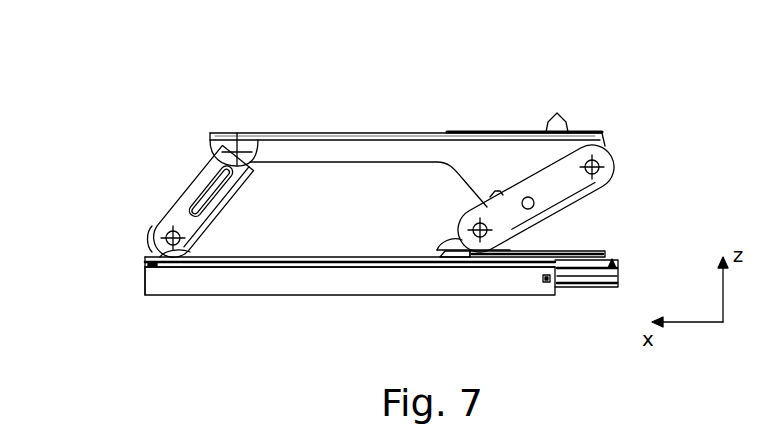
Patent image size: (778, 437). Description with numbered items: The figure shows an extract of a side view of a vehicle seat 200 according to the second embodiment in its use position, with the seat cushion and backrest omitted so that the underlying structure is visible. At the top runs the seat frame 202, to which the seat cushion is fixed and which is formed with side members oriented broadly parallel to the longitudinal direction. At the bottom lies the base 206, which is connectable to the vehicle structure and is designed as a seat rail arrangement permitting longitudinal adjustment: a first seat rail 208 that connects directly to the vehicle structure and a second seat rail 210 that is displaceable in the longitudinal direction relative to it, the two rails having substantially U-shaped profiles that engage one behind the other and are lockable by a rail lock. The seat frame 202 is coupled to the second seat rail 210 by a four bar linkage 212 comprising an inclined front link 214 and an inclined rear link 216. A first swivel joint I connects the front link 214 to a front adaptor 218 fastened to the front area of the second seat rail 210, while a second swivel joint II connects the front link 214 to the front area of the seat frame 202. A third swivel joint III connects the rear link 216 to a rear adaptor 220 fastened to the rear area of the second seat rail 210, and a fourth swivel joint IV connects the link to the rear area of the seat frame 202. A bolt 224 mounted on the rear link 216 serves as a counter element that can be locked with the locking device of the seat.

The vehicle seat 200 is at (158, 95).
The seat frame 202 is at (350, 148).
The base 206 is at (139, 280).
The first seat rail 208 is at (532, 285).
The second seat rail 210 is at (618, 263).
The four bar linkage 212 is at (163, 179).
The front link 214 is at (172, 213).
The rear link 216 is at (567, 178).
The front adaptor 218 is at (198, 256).
The rear adaptor 220 is at (445, 248).
The bolt 224 is at (535, 203).
The first swivel joint I is at (162, 245).
The second swivel joint II is at (237, 150).
The third swivel joint III is at (468, 246).
The fourth swivel joint IV is at (597, 162).